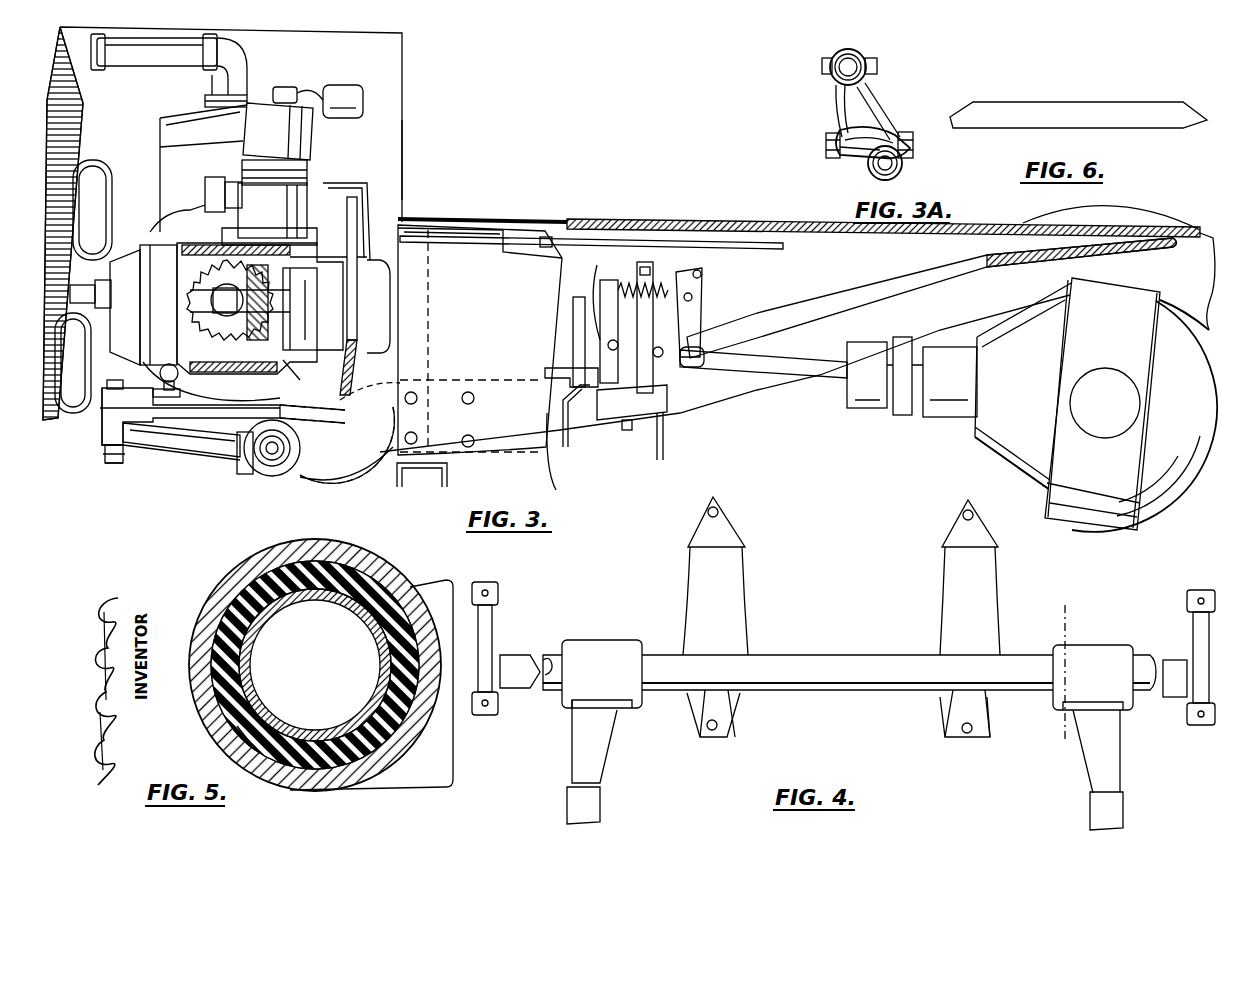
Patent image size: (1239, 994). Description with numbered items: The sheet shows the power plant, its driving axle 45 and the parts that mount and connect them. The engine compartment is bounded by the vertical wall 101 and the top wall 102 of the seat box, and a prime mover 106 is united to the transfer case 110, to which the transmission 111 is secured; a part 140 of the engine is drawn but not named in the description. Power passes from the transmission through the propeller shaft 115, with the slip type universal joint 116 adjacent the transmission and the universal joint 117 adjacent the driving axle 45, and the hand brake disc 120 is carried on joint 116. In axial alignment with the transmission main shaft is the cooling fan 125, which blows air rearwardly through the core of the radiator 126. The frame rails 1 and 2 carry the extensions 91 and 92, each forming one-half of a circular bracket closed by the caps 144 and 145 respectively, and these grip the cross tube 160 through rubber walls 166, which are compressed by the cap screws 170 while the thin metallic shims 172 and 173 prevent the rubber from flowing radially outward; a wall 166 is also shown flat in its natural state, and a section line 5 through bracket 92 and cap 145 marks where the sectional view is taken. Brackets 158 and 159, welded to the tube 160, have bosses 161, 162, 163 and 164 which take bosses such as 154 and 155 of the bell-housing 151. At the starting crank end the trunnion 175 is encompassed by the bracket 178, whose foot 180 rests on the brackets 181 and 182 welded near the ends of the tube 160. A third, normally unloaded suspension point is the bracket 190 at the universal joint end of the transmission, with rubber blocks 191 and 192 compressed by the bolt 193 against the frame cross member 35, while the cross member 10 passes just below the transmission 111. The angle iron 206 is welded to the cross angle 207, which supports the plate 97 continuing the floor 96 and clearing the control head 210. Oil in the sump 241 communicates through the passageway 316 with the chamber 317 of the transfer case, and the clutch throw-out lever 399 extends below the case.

In FIG. 4, the frame rail 1 is at (567, 803).
In FIG. 3, the frame rail 2 is at (762, 392).
In FIG. 4, the frame rail 2 is at (1123, 805).
In FIG. 4, the section line 5 is at (1062, 671).
In FIG. 3, the frame cross member 10 is at (410, 478).
In FIG. 3, the frame cross member 35 is at (665, 455).
In FIG. 3, the driving axle 45 is at (1090, 515).
In FIG. 4, the frame extension 91 is at (582, 742).
In FIG. 3, the frame extension 92 is at (360, 466).
In FIG. 4, the frame extension 92 is at (1120, 745).
In FIG. 5, the frame extension 92 is at (420, 782).
In FIG. 3, the horizontal floor portion 96 is at (833, 222).
In FIG. 3, the plate 97 is at (532, 230).
In FIG. 3, the vertical wall 101 is at (405, 175).
In FIG. 3, the top wall 102 is at (325, 30).
In FIG. 3, the prime mover 106 is at (158, 158).
In FIG. 3, the transfer case 110 is at (170, 205).
In FIG. 3, the transmission 111 is at (510, 447).
In FIG. 3, the propeller shaft 115 is at (822, 380).
In FIG. 3, the slip type universal joint 116 is at (600, 268).
In FIG. 3, the universal joint 117 is at (872, 415).
In FIG. 3, the hand brake disc 120 is at (668, 270).
In FIG. 3, the cooling fan 125 is at (100, 430).
In FIG. 3, the radiator 126 is at (83, 110).
In FIG. 3, the cylinder head 140 is at (318, 132).
In FIG. 4, the cap 144 is at (585, 640).
In FIG. 3, the cap 145 is at (255, 472).
In FIG. 4, the cap 145 is at (1095, 645).
In FIG. 5, the cap 145 is at (328, 535).
In FIG. 3, the bell-housing 151 is at (158, 368).
In FIG. 3, the boss 154 is at (333, 472).
In FIG. 3, the boss 155 is at (105, 398).
In FIG. 4, the bracket 158 is at (745, 597).
In FIG. 3, the bracket 159 is at (190, 462).
In FIG. 4, the bracket 159 is at (950, 592).
In FIG. 3, the cross tube 160 is at (278, 466).
In FIG. 3A, the cross tube 160 is at (902, 168).
In FIG. 4, the cross tube 160 is at (815, 690).
In FIG. 5, the cross tube 160 is at (360, 640).
In FIG. 4, the boss 161 is at (700, 725).
In FIG. 4, the boss 162 is at (732, 512).
In FIG. 4, the boss 163 is at (975, 735).
In FIG. 3, the boss 164 is at (112, 465).
In FIG. 4, the boss 164 is at (953, 525).
In FIG. 6, the rubber wall 166 is at (1080, 100).
In FIG. 5, the rubber wall 166 is at (258, 585).
In FIG. 3, the cap screw 170 is at (238, 476).
In FIG. 5, the thin metallic shim 172 is at (390, 580).
In FIG. 5, the thin metallic shim 173 is at (250, 755).
In FIG. 3A, the trunnion 175 is at (868, 72).
In FIG. 3A, the bracket 178 is at (866, 52).
In FIG. 3A, the foot 180 is at (827, 130).
In FIG. 3A, the bracket 181 is at (853, 162).
In FIG. 4, the bracket 181 is at (498, 585).
In FIG. 4, the bracket 182 is at (1190, 590).
In FIG. 3, the bracket 190 is at (569, 458).
In FIG. 3, the rubber block 191 is at (670, 410).
In FIG. 3, the rubber block 192 is at (605, 425).
In FIG. 3, the bolt 193 is at (552, 368).
In FIG. 3, the angle iron 206 is at (435, 290).
In FIG. 3, the cross angle 207 is at (460, 230).
In FIG. 3, the control head 210 is at (465, 228).
In FIG. 3, the sump 241 is at (214, 362).
In FIG. 3, the passageway 316 is at (290, 380).
In FIG. 3, the chamber 317 is at (352, 390).
In FIG. 3, the lever 399 is at (181, 440).